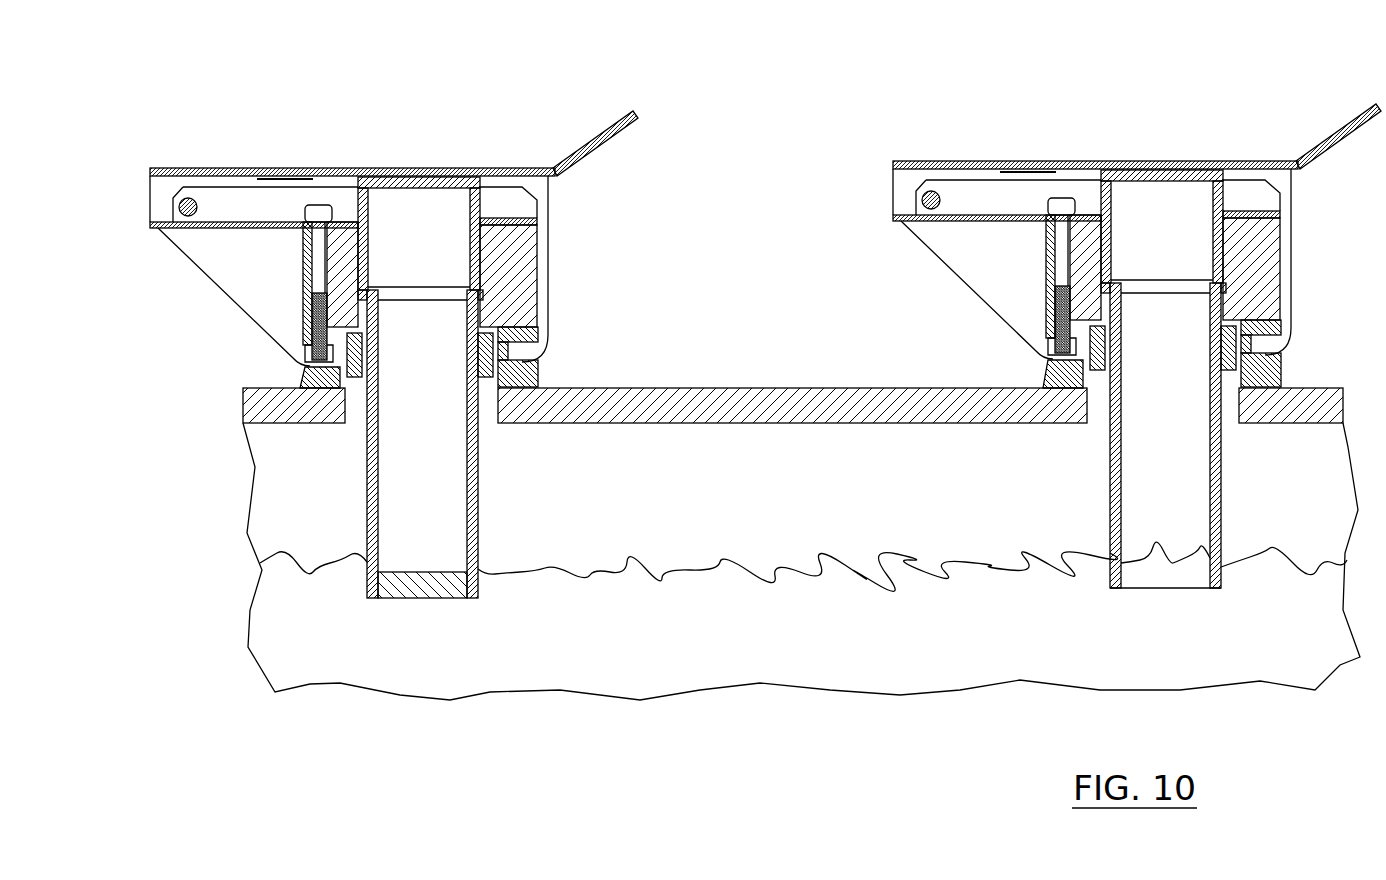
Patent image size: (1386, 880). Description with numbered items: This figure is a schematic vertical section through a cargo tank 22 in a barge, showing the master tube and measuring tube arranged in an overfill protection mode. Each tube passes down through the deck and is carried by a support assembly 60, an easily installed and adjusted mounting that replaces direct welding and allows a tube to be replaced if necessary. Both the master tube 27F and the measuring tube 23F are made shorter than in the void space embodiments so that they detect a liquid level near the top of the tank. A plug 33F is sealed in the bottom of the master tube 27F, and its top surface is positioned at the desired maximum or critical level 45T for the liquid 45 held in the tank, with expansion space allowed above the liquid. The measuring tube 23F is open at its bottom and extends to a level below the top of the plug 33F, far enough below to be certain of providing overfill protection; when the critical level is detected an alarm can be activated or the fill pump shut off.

The assembly 60 is at (529, 110).
The master tube 27F is at (478, 476).
The measuring tube 23F is at (1110, 463).
The plug 33F is at (425, 586).
The cargo tank 22 is at (935, 506).
The liquid 45 is at (728, 646).
The critical level 45T is at (665, 577).